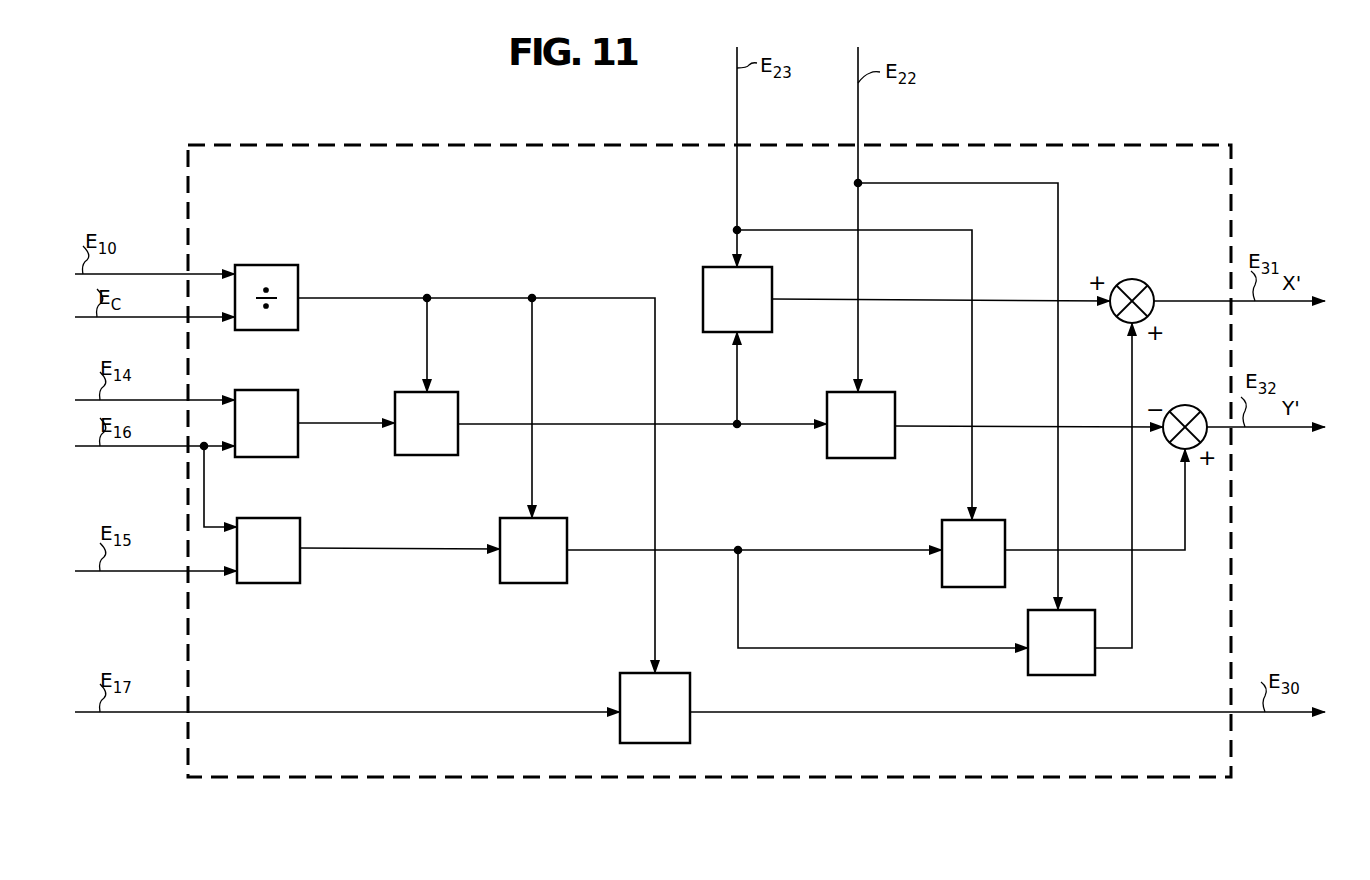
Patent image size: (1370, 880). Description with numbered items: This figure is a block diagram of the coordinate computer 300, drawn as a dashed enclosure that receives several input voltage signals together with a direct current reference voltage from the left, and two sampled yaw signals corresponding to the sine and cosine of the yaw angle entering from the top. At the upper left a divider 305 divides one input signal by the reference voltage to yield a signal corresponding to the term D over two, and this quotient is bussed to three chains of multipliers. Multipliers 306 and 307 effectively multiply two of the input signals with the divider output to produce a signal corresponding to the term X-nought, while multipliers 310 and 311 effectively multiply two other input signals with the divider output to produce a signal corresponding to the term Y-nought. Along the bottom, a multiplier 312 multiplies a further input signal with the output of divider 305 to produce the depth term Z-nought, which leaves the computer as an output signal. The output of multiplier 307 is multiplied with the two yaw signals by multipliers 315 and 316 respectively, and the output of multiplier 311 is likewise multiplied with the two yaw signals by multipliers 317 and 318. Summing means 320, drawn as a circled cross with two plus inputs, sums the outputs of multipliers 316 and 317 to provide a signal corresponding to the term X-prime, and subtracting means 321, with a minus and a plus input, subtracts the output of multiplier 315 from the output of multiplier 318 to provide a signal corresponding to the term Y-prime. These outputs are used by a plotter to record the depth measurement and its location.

The coordinate computer 300 is at (709, 461).
The divider 305 is at (258, 265).
The multiplier 306 is at (256, 390).
The multiplier 307 is at (446, 392).
The multiplier 310 is at (262, 518).
The multiplier 311 is at (548, 518).
The multiplier 312 is at (634, 673).
The multiplier 315 is at (877, 392).
The multiplier 316 is at (760, 243).
The multiplier 317 is at (1070, 610).
The multiplier 318 is at (990, 520).
The summing means 320 is at (1128, 279).
The subtracting means 321 is at (1185, 405).